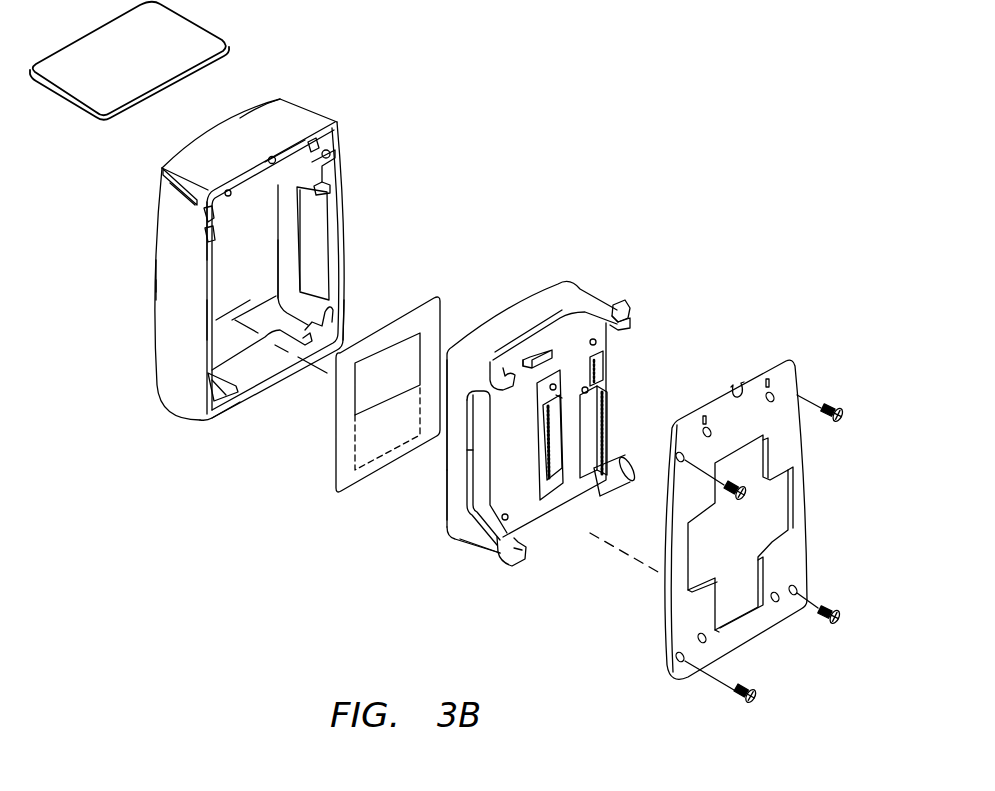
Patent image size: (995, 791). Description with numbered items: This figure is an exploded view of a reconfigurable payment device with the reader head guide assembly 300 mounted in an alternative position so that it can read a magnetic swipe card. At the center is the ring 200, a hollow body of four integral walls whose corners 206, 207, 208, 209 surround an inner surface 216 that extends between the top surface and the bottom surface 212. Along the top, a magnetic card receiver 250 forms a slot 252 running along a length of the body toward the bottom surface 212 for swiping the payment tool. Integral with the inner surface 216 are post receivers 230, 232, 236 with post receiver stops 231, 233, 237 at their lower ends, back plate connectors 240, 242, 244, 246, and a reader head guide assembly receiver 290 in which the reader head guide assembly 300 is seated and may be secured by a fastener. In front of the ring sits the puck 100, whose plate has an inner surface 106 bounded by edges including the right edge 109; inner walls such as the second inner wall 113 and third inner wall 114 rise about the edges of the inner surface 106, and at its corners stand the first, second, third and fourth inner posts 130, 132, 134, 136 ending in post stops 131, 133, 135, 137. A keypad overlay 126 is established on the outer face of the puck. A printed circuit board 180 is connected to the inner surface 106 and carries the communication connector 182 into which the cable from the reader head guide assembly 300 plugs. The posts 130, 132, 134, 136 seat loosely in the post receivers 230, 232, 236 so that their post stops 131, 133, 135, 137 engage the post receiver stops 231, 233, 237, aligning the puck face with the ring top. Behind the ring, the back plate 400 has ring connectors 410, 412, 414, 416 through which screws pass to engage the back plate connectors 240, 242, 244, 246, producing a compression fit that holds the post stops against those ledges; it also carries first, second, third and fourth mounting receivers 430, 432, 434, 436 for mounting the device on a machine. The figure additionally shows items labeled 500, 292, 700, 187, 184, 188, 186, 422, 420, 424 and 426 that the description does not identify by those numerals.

The cover 500 is at (135, 40).
The ring 200 is at (251, 130).
The corner 206 is at (283, 99).
The reader head guide assembly 300 is at (294, 148).
The aperture 292 is at (264, 157).
The reader head guide assembly receiver 290 is at (328, 146).
The back plate connector 240 is at (318, 142).
The corner 207 is at (207, 200).
The post receiver 232 is at (330, 165).
The post receiver stop 233 is at (323, 188).
The slot 252 is at (158, 174).
The magnetic card receiver 250 is at (180, 193).
The back plate connector 246 is at (202, 212).
The post receiver stop 231 is at (205, 234).
The post receiver 230 is at (157, 287).
The sensor 700 is at (163, 285).
The inner surface 216 is at (207, 337).
The bottom surface 212 is at (216, 338).
The back plate connector 244 is at (233, 390).
The post receiver 236 is at (217, 399).
The post receiver stop 237 is at (237, 395).
The corner 208 is at (212, 417).
The back plate connector 242 is at (286, 304).
The corner 209 is at (345, 348).
The keypad overlay 126 is at (336, 440).
The inner surface 106 is at (445, 468).
The right edge 109 is at (457, 483).
The third inner wall 114 is at (478, 552).
The second inner wall 113 is at (483, 558).
The fourth inner post 136 is at (512, 567).
The post stop 137 is at (553, 560).
The printed circuit board 180 is at (530, 513).
The communication connector 182 is at (523, 352).
The puck 100 is at (546, 292).
The connector 187 is at (557, 400).
The post stop 131 is at (540, 352).
The connector 184 is at (571, 365).
The first inner post 130 is at (492, 372).
The second inner post 132 is at (624, 306).
The post stop 133 is at (631, 324).
The connector 188 is at (600, 393).
The connector 186 is at (618, 413).
The post stop 135 is at (629, 488).
The third inner post 134 is at (627, 497).
The first mounting receiver 430 is at (708, 428).
The second mounting receiver 432 is at (769, 389).
The back plate 400 is at (751, 373).
The ring connector 412 is at (773, 393).
The screw 422 is at (841, 408).
The ring connector 410 is at (680, 452).
The screw 420 is at (748, 495).
The third mounting receiver 434 is at (777, 593).
The ring connector 414 is at (793, 596).
The screw 424 is at (838, 625).
The fourth mounting receiver 436 is at (700, 642).
The ring connector 416 is at (683, 662).
The screw 426 is at (760, 698).